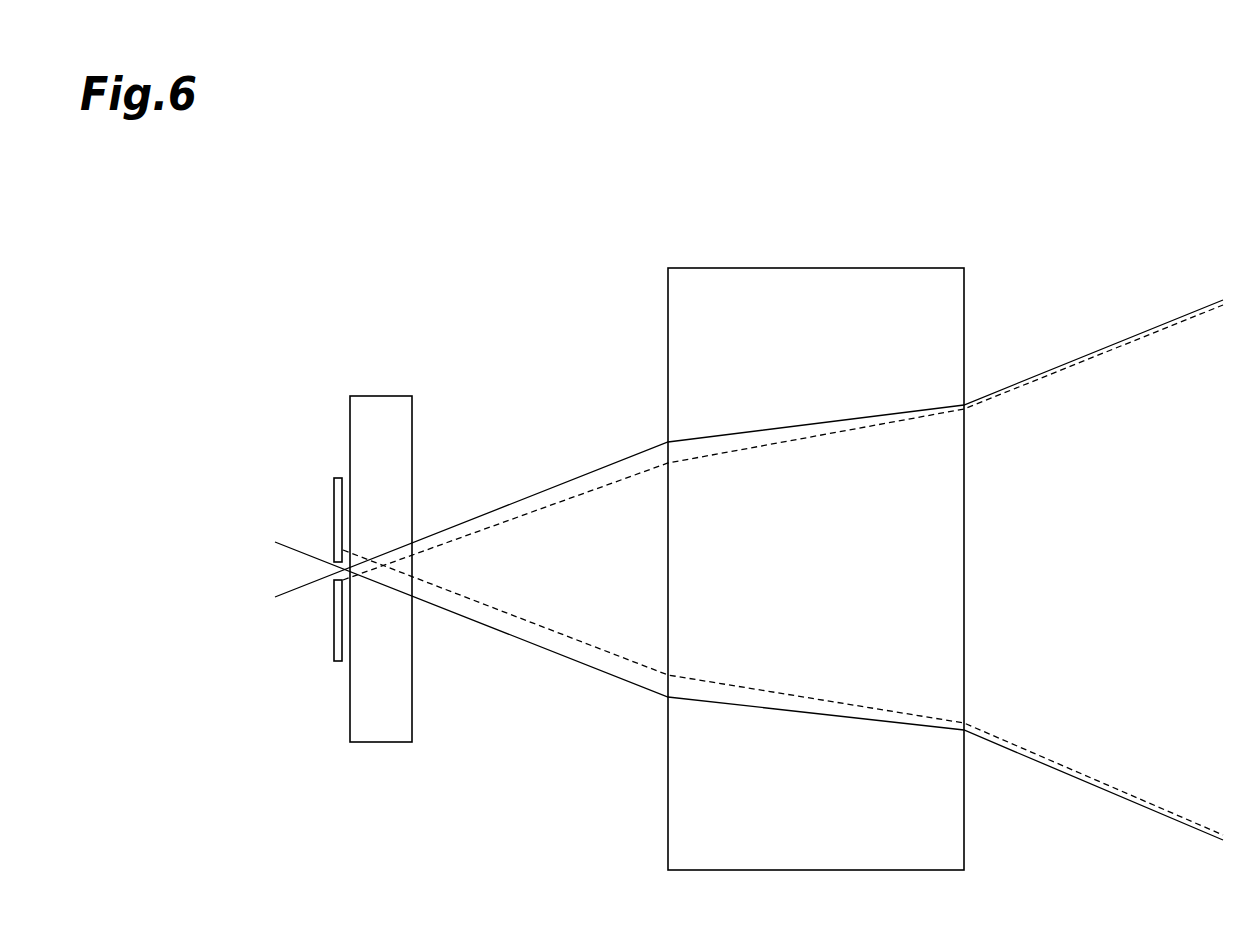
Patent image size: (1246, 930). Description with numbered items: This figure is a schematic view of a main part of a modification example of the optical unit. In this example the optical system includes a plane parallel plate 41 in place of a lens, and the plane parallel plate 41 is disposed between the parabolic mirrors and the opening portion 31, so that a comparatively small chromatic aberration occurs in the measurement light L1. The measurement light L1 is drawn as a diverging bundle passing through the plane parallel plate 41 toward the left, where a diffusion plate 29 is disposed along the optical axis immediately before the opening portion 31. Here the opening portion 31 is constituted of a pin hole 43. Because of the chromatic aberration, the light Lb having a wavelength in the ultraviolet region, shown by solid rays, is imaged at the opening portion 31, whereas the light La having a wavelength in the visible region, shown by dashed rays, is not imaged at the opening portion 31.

The plane parallel plate 41 is at (822, 268).
The diffusion plate 29 is at (380, 396).
The pin hole 43 is at (336, 478).
The opening portion 31 is at (293, 529).
The measurement light L1 is at (749, 570).
The light having a wavelength in the visible region La is at (583, 496).
The light having a wavelength in the ultraviolet region Lb is at (480, 515).